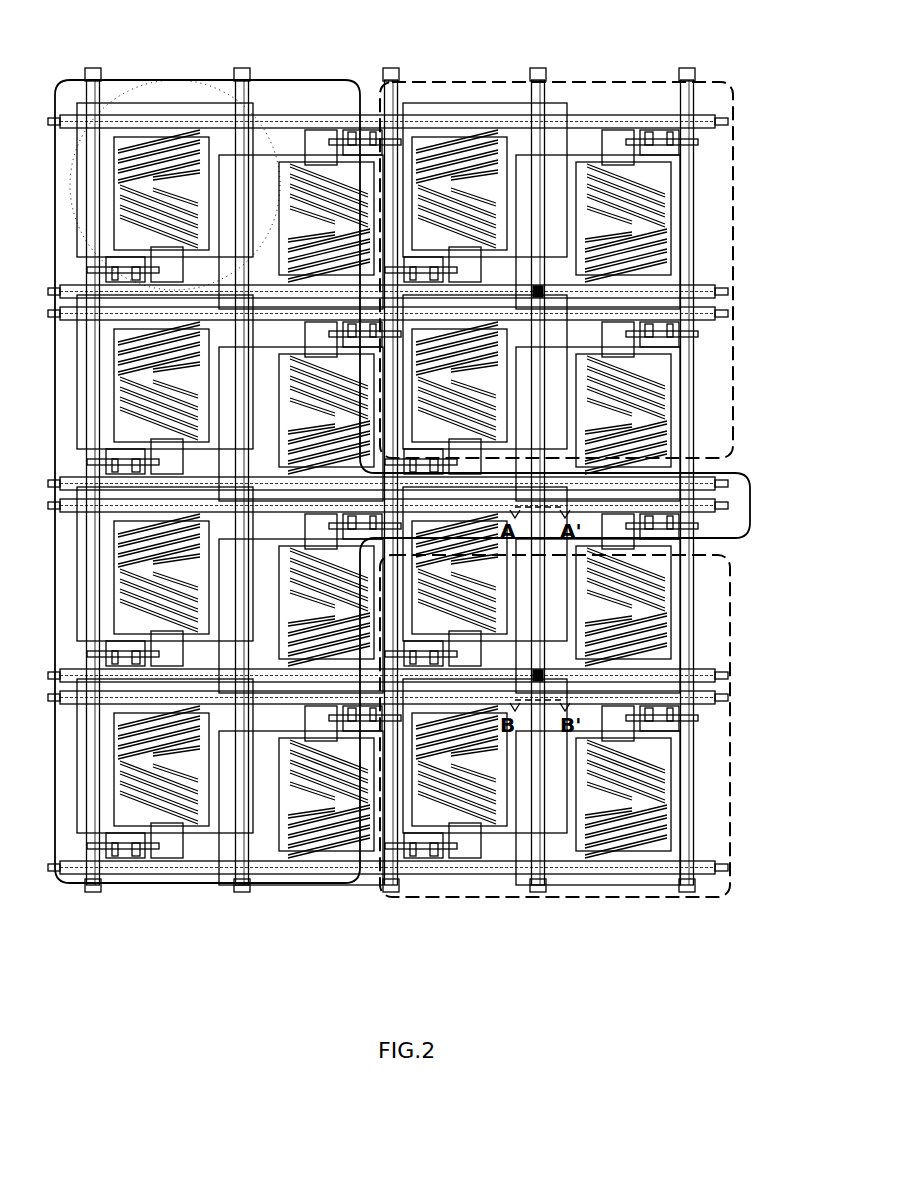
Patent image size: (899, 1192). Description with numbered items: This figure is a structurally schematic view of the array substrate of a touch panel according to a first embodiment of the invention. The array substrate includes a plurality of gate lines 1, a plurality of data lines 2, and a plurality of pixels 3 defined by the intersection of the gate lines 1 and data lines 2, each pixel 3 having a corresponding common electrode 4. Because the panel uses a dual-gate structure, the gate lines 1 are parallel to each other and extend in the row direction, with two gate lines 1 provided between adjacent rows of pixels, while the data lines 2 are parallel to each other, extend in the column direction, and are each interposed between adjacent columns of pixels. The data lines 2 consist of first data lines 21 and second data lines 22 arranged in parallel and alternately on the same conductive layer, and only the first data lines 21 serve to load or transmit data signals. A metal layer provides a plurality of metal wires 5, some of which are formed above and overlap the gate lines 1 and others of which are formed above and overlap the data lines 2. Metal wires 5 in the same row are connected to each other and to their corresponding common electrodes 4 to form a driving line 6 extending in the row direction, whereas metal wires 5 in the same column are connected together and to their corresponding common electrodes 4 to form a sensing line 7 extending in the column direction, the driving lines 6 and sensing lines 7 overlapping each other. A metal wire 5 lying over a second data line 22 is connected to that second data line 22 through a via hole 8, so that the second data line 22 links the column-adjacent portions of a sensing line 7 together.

The gate line 1 is at (712, 285).
The data line 2 is at (429, 491).
The first data line 21 is at (100, 93).
The second data line 22 is at (236, 140).
The pixel 3 is at (192, 80).
The common electrode 4 is at (268, 107).
The metal wire 5 is at (395, 66).
The driving line 6 is at (53, 385).
The sensing line 7 is at (732, 597).
The via hole 8 is at (543, 287).